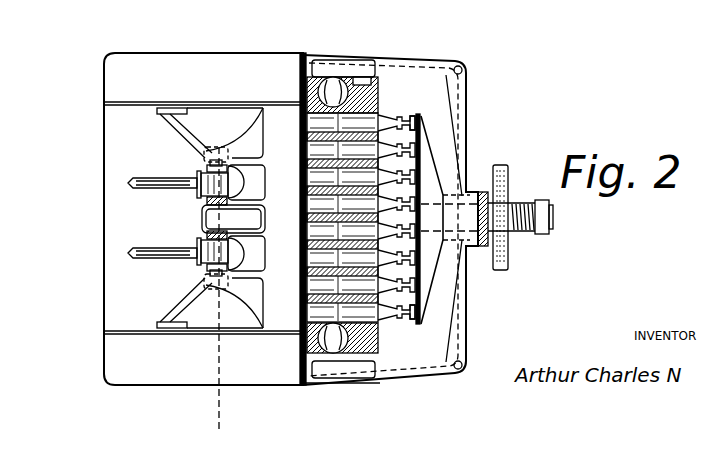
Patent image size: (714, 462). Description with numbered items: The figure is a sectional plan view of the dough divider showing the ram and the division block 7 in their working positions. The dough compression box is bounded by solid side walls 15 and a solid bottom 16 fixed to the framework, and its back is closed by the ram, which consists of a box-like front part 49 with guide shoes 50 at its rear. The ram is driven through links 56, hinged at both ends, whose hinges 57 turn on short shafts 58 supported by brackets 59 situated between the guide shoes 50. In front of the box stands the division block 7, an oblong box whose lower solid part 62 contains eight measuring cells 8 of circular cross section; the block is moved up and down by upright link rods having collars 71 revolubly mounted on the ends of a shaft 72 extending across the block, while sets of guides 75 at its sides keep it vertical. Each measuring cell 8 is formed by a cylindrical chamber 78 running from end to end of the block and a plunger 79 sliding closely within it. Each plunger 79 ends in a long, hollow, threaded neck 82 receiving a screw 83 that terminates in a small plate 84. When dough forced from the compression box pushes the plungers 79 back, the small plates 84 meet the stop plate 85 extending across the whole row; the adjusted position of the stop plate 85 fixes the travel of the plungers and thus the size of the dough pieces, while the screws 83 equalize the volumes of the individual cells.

The division block 7 is at (343, 90).
The measuring cells 8 is at (303, 100).
The side walls 15 is at (123, 102).
The bottom 16 is at (277, 123).
The box-like front part 49 is at (202, 218).
The guide shoes 50 is at (172, 110).
The links 56 is at (128, 257).
The hinges 57 is at (197, 247).
The short shafts 58 is at (216, 147).
The brackets 59 is at (212, 222).
The lower solid part 62 is at (370, 95).
The collars 71 is at (301, 335).
The shaft 72 is at (331, 80).
The guides 75 is at (368, 78).
The cylindrical chambers 78 is at (243, 387).
The plungers 79 is at (360, 352).
The necks 82 is at (385, 115).
The screws 83 is at (380, 110).
The small plates 84 is at (400, 115).
The stop plate 85 is at (421, 130).